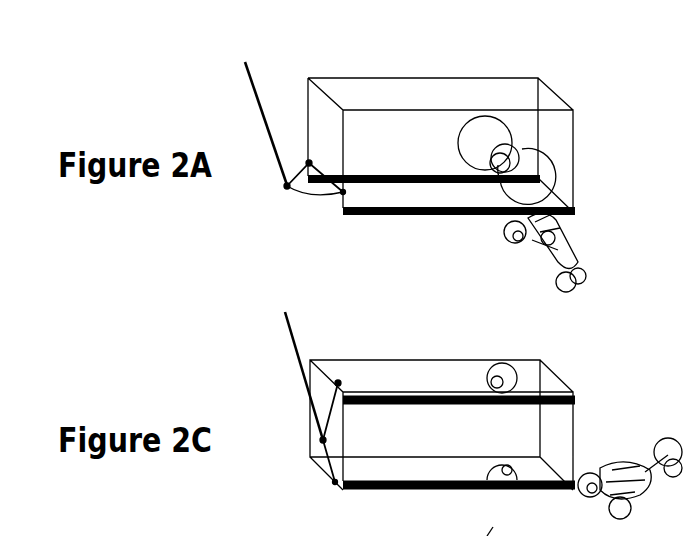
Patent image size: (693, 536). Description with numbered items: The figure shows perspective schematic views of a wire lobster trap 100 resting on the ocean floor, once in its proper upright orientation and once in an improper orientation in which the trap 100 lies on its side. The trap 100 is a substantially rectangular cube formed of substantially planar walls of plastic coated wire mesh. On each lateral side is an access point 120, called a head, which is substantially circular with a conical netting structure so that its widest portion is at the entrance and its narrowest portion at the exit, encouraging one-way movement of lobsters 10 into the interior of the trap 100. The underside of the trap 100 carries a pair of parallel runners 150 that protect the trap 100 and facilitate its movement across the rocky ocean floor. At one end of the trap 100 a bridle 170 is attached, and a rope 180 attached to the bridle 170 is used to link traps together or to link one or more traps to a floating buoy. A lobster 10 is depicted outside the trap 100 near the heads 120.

In FIG. 2A, the wire lobster trap 100 is at (487, 75).
In FIG. 2C, the wire lobster trap 100 is at (441, 425).
In FIG. 2A, the runners 150 is at (378, 218).
In FIG. 2C, the runners 150 is at (459, 442).
In FIG. 2A, the access point (head) 120 is at (550, 163).
In FIG. 2C, the access point (head) 120 is at (502, 421).
In FIG. 2A, the rope 180 is at (245, 88).
In FIG. 2C, the rope 180 is at (304, 376).
In FIG. 2A, the bridle 170 is at (285, 190).
In FIG. 2C, the bridle 170 is at (330, 432).
In FIG. 2A, the lobsters 10 is at (562, 238).
In FIG. 2C, the lobsters 10 is at (630, 478).